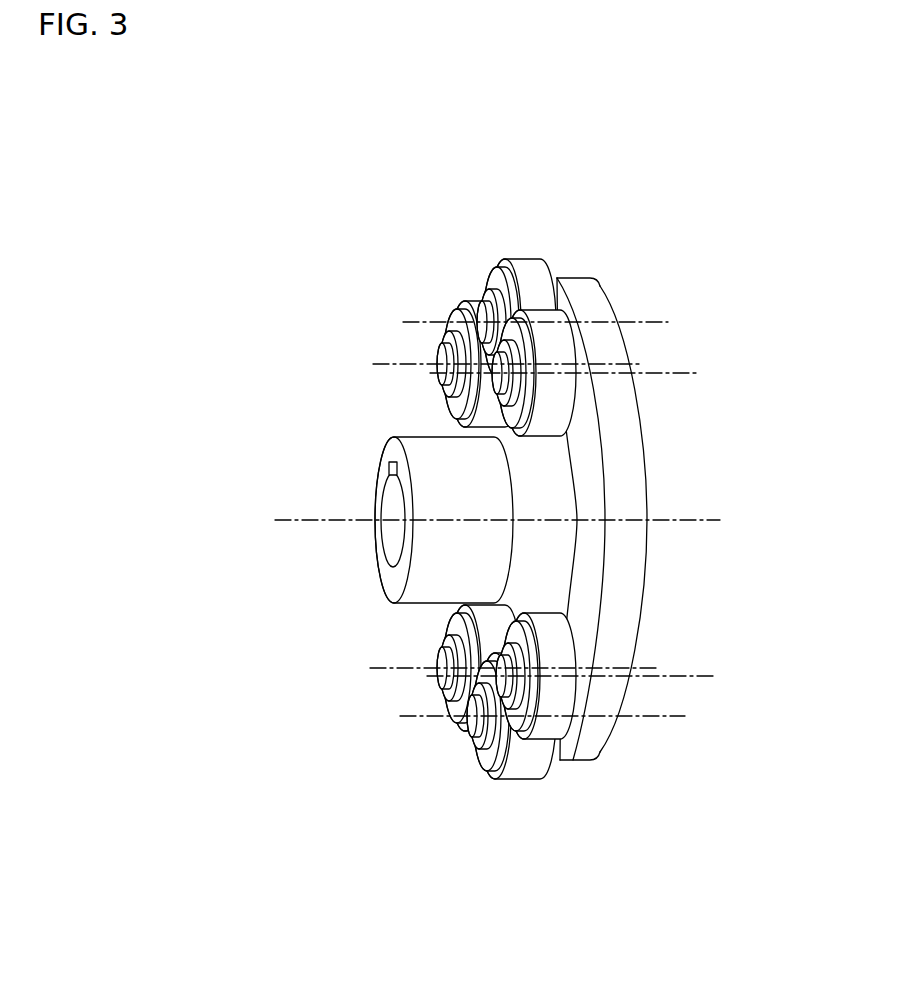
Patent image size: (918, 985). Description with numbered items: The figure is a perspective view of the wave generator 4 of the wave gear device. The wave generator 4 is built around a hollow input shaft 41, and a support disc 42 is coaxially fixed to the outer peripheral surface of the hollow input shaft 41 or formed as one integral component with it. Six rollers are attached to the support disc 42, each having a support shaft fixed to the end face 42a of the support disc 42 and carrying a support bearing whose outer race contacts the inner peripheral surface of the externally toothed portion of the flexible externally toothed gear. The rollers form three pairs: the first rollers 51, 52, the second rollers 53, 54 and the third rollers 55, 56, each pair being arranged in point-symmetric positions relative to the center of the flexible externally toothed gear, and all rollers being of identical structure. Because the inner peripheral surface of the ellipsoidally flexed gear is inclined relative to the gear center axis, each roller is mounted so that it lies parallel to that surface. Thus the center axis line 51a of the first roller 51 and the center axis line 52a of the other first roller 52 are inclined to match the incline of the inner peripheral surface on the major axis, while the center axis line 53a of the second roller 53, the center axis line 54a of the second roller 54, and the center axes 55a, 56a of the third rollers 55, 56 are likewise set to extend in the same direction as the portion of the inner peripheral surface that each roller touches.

The wave generator 4 is at (647, 203).
The hollow input shaft 41 is at (399, 418).
The support disc 42 is at (639, 490).
The end face of the support disc 42a is at (599, 540).
The first roller 51 is at (516, 248).
The center axis line of the first roller 51a is at (424, 321).
The first roller 52 is at (522, 790).
The center axis line of the other first roller 52a is at (427, 717).
The second roller 53 is at (581, 411).
The center axis line of the second roller 53a is at (664, 377).
The second roller 54 is at (433, 636).
The center axis line of the other second roller 54a is at (394, 668).
The third roller 55 is at (430, 345).
The center axis of the third roller 55a is at (392, 365).
The third roller 56 is at (584, 612).
The center axis of the other third roller 56a is at (670, 676).